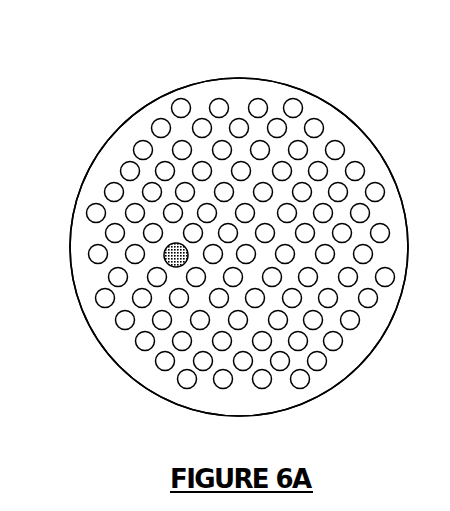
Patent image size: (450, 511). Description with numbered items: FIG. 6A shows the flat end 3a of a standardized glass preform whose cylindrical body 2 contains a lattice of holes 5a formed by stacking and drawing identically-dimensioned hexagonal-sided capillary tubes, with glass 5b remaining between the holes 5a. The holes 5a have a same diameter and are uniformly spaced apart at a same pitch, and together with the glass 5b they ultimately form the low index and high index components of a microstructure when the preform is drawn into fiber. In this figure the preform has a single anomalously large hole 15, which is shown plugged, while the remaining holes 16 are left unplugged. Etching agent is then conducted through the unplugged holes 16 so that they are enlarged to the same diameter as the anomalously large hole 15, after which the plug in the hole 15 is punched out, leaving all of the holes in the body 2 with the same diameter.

The cylindrical body 2 is at (99, 352).
The flat end 3a is at (355, 136).
The holes 5a is at (264, 98).
The glass between the holes 5b is at (293, 133).
The anomalously large hole 15 is at (163, 252).
The unplugged holes 16 is at (172, 106).